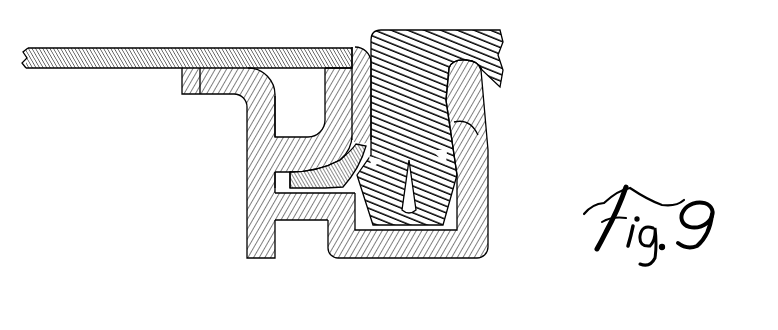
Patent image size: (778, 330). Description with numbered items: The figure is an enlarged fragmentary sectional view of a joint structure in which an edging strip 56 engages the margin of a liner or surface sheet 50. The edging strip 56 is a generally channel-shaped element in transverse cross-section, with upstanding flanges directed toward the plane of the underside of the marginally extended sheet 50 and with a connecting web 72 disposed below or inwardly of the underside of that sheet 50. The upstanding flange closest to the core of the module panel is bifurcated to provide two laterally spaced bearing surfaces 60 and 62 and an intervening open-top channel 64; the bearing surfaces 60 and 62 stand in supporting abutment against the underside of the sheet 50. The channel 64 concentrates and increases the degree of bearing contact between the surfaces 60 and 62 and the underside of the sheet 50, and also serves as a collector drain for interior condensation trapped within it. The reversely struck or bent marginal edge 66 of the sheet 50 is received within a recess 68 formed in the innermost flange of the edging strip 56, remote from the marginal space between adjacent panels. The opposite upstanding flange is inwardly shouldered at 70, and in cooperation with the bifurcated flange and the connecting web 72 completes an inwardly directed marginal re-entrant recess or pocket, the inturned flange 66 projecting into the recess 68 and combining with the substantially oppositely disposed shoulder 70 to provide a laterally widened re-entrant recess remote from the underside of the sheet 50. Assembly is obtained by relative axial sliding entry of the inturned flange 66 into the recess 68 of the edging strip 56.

The surface sheet 50 is at (93, 48).
The edging strip 56 is at (246, 217).
The bearing surface 60 is at (322, 75).
The bearing surface 62 is at (201, 94).
The open-top channel 64 is at (307, 107).
The reversely bent marginal edge 66 is at (276, 183).
The recess 68 is at (318, 193).
The shoulder 70 is at (473, 117).
The connecting web 72 is at (436, 258).